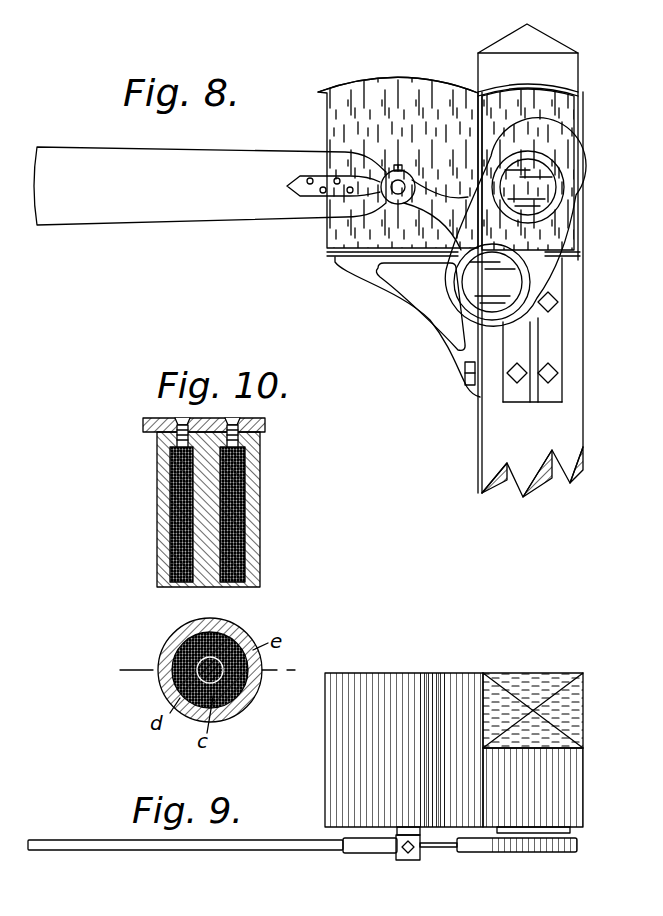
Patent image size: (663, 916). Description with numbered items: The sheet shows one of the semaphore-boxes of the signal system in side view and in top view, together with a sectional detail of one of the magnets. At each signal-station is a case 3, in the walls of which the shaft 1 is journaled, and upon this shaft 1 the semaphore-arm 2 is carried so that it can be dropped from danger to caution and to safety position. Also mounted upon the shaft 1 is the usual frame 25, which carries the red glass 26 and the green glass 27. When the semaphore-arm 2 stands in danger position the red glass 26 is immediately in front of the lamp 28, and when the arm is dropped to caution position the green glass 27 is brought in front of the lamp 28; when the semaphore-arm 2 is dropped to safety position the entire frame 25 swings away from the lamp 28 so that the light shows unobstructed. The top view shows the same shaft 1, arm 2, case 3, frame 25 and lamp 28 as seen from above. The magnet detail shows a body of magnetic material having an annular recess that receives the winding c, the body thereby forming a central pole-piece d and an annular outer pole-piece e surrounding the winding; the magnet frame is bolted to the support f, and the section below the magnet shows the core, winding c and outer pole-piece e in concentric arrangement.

In FIG. 9, the shaft 1 is at (410, 830).
In FIG. 8, the semaphore-arm 2 is at (224, 186).
In FIG. 9, the semaphore-arm 2 is at (192, 852).
In FIG. 8, the case 3 is at (450, 260).
In FIG. 9, the case 3 is at (454, 750).
In FIG. 8, the frame 25 is at (495, 222).
In FIG. 9, the frame 25 is at (531, 852).
In FIG. 8, the red glass 26 is at (528, 187).
In FIG. 8, the green glass 27 is at (492, 282).
In FIG. 9, the lamp 28 is at (570, 832).
In FIG. 10, the winding c is at (238, 580).
In FIG. 10, the central pole-piece d is at (210, 578).
In FIG. 10, the annular outer pole-piece e is at (163, 568).
In FIG. 10, the support f is at (260, 422).